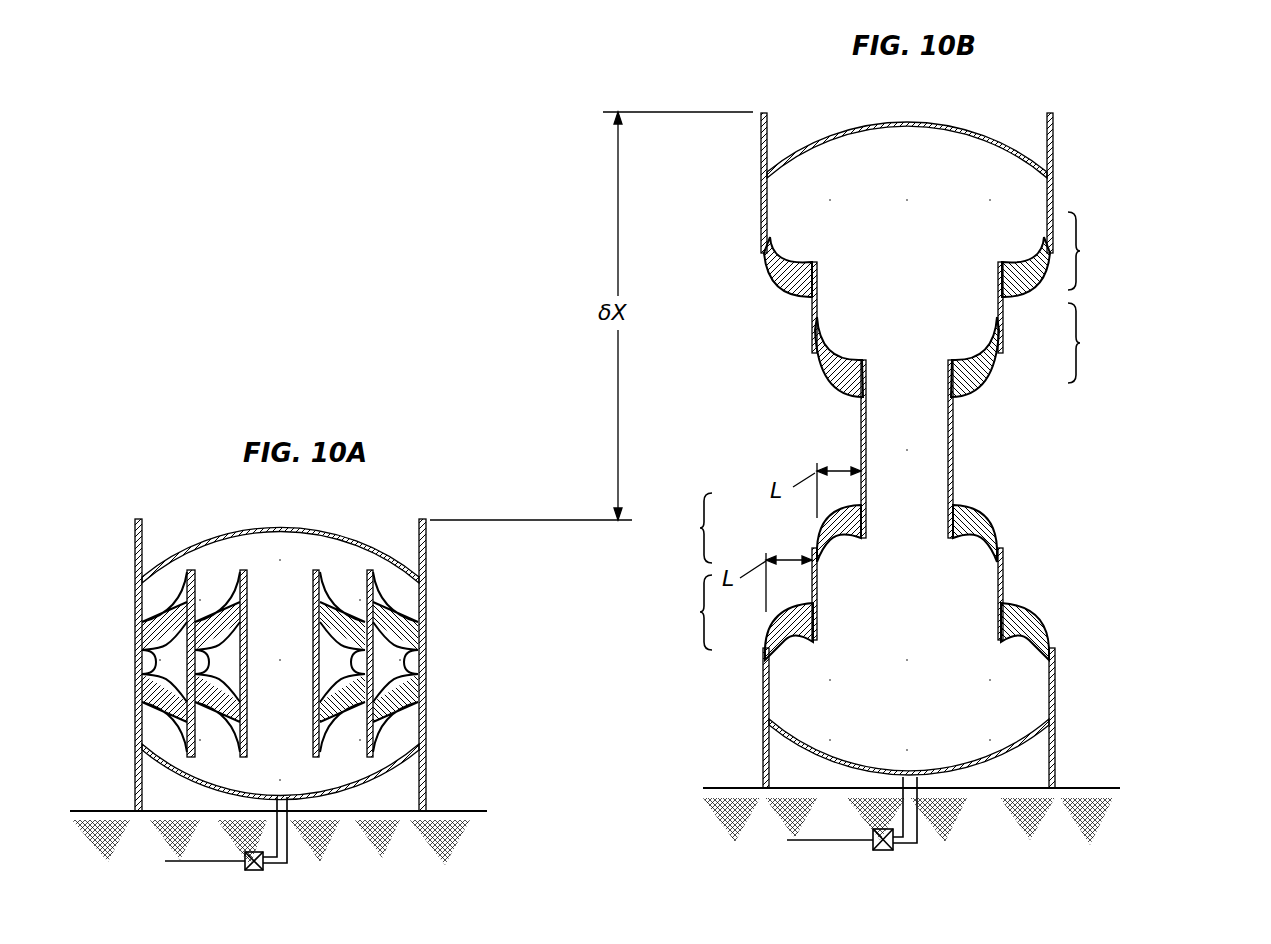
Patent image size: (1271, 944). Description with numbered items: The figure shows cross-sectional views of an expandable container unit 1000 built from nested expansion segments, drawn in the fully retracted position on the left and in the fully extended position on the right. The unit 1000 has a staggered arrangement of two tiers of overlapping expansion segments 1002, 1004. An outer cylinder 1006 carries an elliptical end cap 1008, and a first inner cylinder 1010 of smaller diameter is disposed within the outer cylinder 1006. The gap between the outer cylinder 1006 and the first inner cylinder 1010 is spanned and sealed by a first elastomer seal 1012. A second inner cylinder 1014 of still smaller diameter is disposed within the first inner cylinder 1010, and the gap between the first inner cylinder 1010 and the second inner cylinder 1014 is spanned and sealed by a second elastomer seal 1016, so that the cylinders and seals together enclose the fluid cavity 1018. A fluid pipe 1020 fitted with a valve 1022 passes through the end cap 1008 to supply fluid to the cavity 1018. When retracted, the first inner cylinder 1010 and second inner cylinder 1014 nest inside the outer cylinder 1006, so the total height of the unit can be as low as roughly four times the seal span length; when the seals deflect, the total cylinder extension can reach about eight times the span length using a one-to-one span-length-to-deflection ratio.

In FIG. 10B, the expandable container unit 1000 is at (1150, 460).
In FIG. 10B, the expansion segment 1002 is at (892, 431).
In FIG. 10B, the expansion segment 1004 is at (892, 433).
In FIG. 10A, the outer cylinder 1006 is at (425, 602).
In FIG. 10B, the outer cylinder 1006 is at (1052, 197).
In FIG. 10A, the elliptical end cap 1008 is at (300, 525).
In FIG. 10B, the elliptical end cap 1008 is at (1030, 159).
In FIG. 10B, the first inner cylinder 1010 is at (812, 320).
In FIG. 10A, the first elastomer seal 1012 is at (140, 662).
In FIG. 10B, the first elastomer seal 1012 is at (785, 282).
In FIG. 10B, the second inner cylinder 1014 is at (953, 452).
In FIG. 10A, the second elastomer seal 1016 is at (425, 662).
In FIG. 10B, the second elastomer seal 1016 is at (828, 380).
In FIG. 10A, the fluid cavity 1018 is at (253, 550).
In FIG. 10B, the fluid cavity 1018 is at (806, 699).
In FIG. 10A, the fluid pipe 1020 is at (288, 852).
In FIG. 10B, the fluid pipe 1020 is at (918, 820).
In FIG. 10A, the valve 1022 is at (255, 872).
In FIG. 10B, the valve 1022 is at (888, 852).